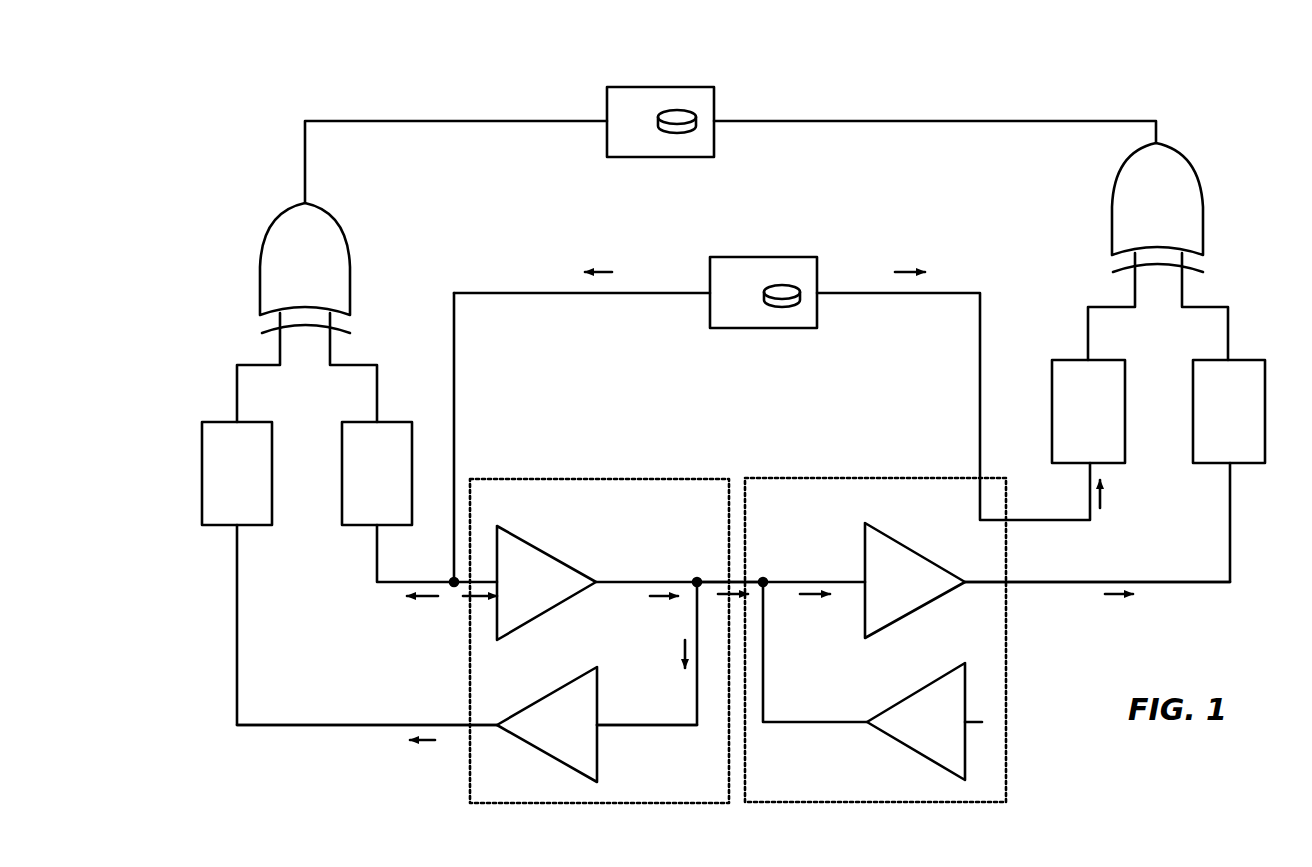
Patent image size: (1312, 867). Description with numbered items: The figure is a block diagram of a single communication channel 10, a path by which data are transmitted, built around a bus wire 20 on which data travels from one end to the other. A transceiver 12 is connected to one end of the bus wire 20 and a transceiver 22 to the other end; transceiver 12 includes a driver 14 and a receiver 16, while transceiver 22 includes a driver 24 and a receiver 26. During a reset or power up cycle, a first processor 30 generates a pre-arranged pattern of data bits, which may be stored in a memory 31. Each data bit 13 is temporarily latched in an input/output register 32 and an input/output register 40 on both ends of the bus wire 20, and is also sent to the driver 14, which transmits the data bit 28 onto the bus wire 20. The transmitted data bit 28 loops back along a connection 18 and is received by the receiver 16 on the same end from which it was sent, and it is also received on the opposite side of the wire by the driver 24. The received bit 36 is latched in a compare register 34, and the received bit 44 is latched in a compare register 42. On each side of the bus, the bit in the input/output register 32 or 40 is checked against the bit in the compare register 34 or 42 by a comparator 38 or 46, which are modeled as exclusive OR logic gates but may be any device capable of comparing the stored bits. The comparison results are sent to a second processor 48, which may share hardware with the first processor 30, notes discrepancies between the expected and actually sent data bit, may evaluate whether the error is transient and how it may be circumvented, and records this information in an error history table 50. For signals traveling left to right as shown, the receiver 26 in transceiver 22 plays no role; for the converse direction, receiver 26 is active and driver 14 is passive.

The communication channel 10 is at (303, 820).
The transceiver 12 is at (470, 793).
The data bit 13 is at (600, 272).
The driver 14 is at (546, 583).
The receiver 16 is at (547, 724).
The connection 18 is at (630, 727).
The bus wire 20 is at (735, 590).
The transceiver 22 is at (1010, 777).
The driver 24 is at (915, 580).
The receiver 26 is at (916, 721).
The transmitted data bit 28 is at (685, 660).
The first processor 30 is at (718, 257).
The memory 31 is at (785, 285).
The input/output register 32 is at (362, 527).
The compare register 34 is at (220, 527).
The received bit 36 is at (428, 742).
The comparator 38 is at (307, 312).
The input/output register 40 is at (1075, 465).
The compare register 42 is at (1243, 465).
The received bit 44 is at (1112, 596).
The comparator 46 is at (1158, 251).
The second processor 48 is at (618, 87).
The error history table 50 is at (683, 110).